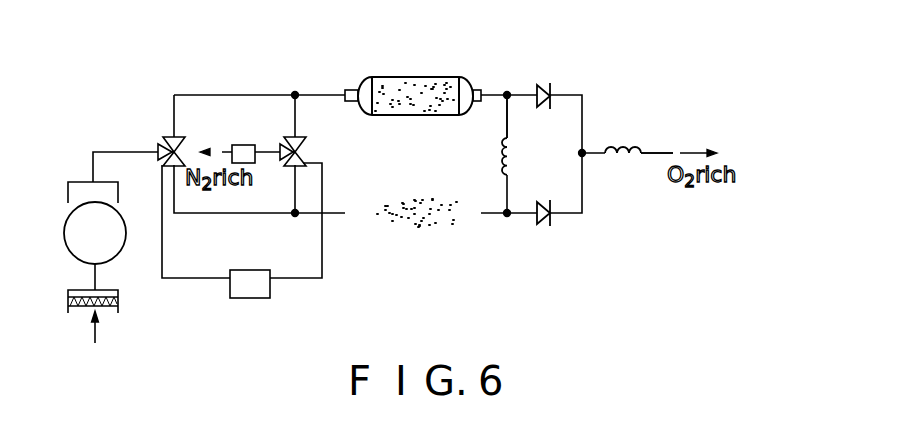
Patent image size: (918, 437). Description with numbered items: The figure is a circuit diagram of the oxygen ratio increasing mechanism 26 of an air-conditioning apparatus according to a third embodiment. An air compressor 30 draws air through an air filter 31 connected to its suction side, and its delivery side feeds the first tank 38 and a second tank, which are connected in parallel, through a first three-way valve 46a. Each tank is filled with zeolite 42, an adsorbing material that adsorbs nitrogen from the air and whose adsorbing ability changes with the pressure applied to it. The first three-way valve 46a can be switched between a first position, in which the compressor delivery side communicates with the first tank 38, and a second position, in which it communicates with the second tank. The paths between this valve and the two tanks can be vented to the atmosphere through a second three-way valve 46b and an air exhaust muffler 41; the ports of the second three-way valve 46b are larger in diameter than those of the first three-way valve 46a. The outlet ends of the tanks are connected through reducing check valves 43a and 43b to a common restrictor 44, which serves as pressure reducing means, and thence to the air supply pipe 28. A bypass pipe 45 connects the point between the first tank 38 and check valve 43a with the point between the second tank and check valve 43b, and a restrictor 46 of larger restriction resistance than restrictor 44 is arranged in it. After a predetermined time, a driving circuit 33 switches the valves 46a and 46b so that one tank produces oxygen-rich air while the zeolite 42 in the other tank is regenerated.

The oxygen ratio increasing mechanism 26 is at (452, 62).
The air supply pipe 28 is at (658, 152).
The air compressor 30 is at (113, 245).
The air filter 31 is at (118, 300).
The driving circuit 33 is at (250, 270).
The first tank 38 is at (375, 75).
The air exhaust muffler 41 is at (240, 145).
The zeolite 42 is at (423, 80).
The reducing check valve 43a is at (545, 80).
The reducing check valve 43b is at (552, 224).
The restrictor 44 is at (620, 143).
The bypass pipe 45 is at (509, 120).
The restrictor 46 is at (515, 155).
The first three-way valve 46a is at (158, 147).
The second three-way valve 46b is at (305, 150).